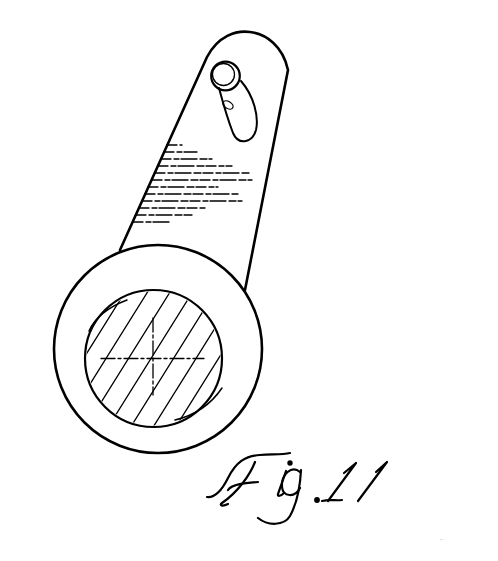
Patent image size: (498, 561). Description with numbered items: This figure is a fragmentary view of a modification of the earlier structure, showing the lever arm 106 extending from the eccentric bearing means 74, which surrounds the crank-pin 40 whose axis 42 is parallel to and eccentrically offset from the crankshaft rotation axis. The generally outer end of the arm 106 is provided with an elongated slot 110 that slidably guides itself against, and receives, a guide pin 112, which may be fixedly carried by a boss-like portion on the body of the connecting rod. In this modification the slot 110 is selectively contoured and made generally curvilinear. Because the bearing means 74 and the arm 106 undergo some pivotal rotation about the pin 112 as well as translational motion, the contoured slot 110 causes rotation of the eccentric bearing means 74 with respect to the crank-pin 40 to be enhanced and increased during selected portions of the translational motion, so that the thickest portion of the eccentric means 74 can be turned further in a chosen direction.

The lever arm 106 is at (247, 195).
The guide pin 112 is at (213, 63).
The slot 110 is at (226, 108).
The eccentric bearing means 74 is at (259, 315).
The crank-pin portion 40 is at (213, 393).
The axis 42 is at (151, 357).